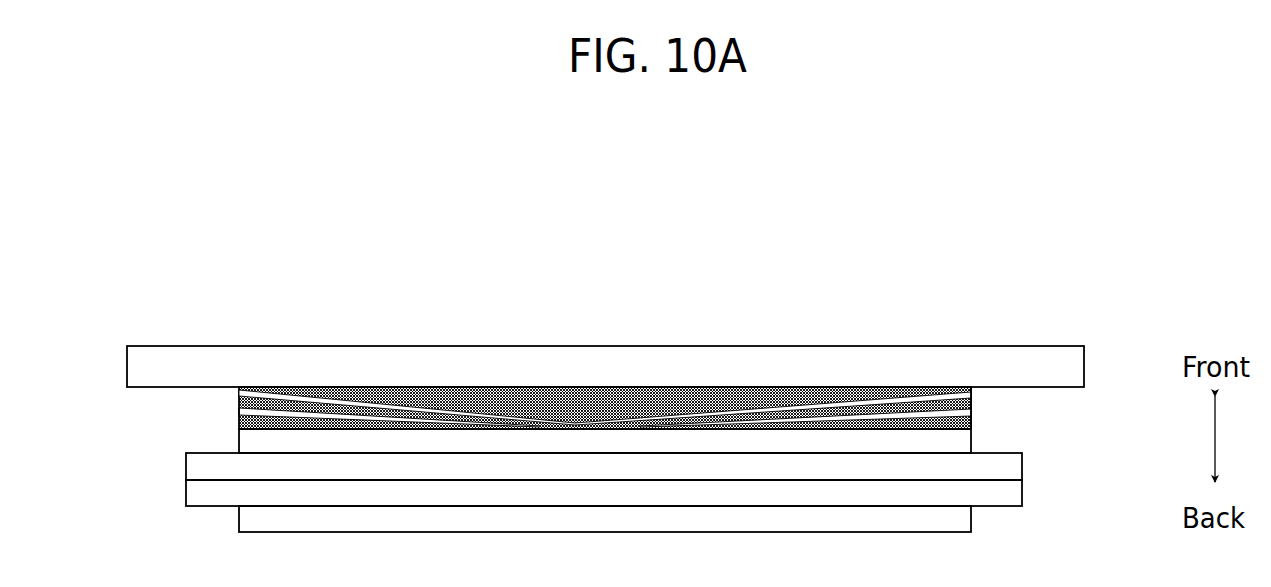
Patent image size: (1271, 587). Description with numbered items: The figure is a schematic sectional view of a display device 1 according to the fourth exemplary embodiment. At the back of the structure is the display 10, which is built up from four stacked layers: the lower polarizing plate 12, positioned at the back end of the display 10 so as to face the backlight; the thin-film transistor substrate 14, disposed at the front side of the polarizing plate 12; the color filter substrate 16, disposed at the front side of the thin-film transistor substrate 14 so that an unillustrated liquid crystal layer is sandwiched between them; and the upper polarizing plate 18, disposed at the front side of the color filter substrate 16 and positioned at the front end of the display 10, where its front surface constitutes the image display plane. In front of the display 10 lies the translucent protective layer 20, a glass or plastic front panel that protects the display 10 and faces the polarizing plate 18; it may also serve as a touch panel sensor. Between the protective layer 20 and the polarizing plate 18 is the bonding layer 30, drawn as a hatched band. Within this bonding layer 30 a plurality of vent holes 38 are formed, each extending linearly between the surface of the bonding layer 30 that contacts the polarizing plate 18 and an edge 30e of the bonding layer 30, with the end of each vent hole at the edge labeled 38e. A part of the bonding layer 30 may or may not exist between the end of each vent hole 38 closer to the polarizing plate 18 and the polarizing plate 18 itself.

The display device 1 is at (1092, 303).
The display 10 is at (1094, 433).
The polarizing plate 12 is at (972, 517).
The thin-film transistor substrate 14 is at (1022, 493).
The color filter substrate 16 is at (1022, 466).
The polarizing plate 18 is at (972, 440).
The protective layer 20 is at (127, 364).
The bonding layer 30 is at (575, 385).
The edge of bonding layer 30e is at (972, 420).
The vent hole 38 is at (239, 392).
The end of void 38e is at (239, 419).